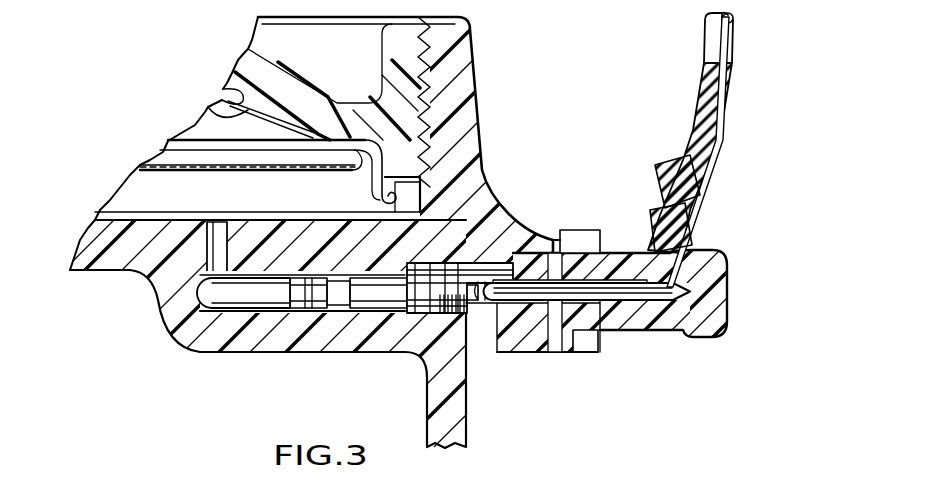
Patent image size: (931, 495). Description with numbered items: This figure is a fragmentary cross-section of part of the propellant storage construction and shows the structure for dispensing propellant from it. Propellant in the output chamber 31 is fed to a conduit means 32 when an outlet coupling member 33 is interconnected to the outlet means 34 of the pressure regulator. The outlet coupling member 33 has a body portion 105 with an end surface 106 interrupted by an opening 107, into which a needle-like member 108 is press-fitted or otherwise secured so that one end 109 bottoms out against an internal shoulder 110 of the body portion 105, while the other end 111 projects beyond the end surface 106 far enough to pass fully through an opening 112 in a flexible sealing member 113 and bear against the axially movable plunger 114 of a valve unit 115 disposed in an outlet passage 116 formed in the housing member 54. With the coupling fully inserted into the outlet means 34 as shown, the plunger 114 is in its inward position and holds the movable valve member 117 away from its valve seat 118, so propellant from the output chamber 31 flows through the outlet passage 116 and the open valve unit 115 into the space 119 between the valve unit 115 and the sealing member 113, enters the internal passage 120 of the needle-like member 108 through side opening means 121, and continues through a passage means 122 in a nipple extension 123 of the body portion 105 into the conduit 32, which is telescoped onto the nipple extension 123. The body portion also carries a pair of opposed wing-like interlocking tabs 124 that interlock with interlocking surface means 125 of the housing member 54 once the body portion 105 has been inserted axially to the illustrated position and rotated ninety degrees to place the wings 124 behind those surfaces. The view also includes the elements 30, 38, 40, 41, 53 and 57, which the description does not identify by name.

The cover seal 30 is at (225, 85).
The output chamber 31 is at (132, 188).
The conduit means 32 is at (734, 44).
The outlet coupling member 33 is at (710, 313).
The outlet means 34 is at (437, 248).
The gasket 38 is at (177, 163).
The cover lip 40 is at (225, 114).
The flange 41 is at (263, 173).
The housing wall 53 is at (470, 115).
The housing member 54 is at (460, 50).
The base wall 57 is at (105, 272).
The body portion 105 is at (630, 315).
The end surface 106 is at (553, 250).
The opening 107 is at (598, 288).
The needle-like member 108 is at (555, 330).
The one end 109 is at (642, 303).
The internal shoulder 110 is at (652, 288).
The other end 111 is at (485, 277).
The opening 112 is at (544, 250).
The flexible sealing member 113 is at (530, 305).
The plunger 114 is at (490, 312).
The valve unit 115 is at (405, 322).
The outlet passage 116 is at (293, 308).
The movable valve member 117 is at (325, 280).
The valve seat 118 is at (348, 308).
The space 119 is at (498, 315).
The internal passage 120 is at (627, 320).
The side opening means 121 is at (503, 265).
The passage means 122 is at (702, 230).
The nipple extension 123 is at (702, 198).
The wing-like interlocking tabs 124 is at (594, 360).
The interlocking surface means 125 is at (570, 240).